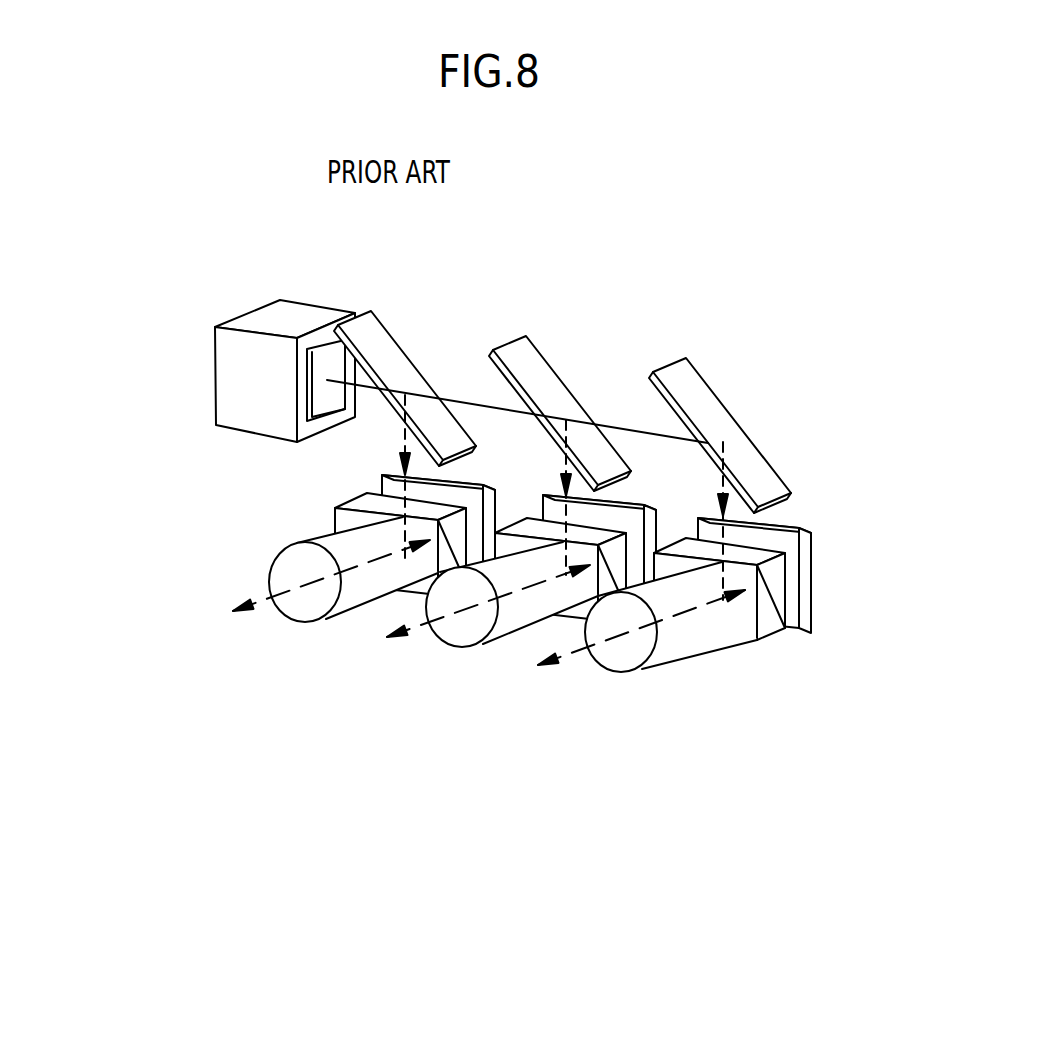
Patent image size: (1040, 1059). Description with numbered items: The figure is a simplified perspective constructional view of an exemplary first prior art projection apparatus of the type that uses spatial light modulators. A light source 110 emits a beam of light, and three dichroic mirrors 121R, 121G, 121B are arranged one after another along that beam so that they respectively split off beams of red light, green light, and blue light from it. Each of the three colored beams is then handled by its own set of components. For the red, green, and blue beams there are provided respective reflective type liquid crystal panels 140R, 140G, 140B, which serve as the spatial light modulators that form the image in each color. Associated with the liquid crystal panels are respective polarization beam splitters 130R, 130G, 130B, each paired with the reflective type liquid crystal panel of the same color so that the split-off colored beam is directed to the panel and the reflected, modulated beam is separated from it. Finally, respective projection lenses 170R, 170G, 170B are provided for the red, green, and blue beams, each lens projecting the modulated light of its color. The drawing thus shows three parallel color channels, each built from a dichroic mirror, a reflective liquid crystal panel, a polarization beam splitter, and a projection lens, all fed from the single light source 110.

The light source 110 is at (263, 320).
The dichroic mirror 121B is at (443, 330).
The dichroic mirror 121G is at (547, 378).
The dichroic mirror 121R is at (692, 392).
The reflective type liquid crystal panel 140B is at (384, 482).
The reflective type liquid crystal panel 140G is at (627, 520).
The reflective type liquid crystal panel 140R is at (810, 592).
The polarization beam splitter 130B is at (337, 519).
The polarization beam splitter 130G is at (567, 605).
The polarization beam splitter 130R is at (740, 627).
The projection lens 170B is at (302, 603).
The projection lens 170G is at (445, 632).
The projection lens 170R is at (630, 663).